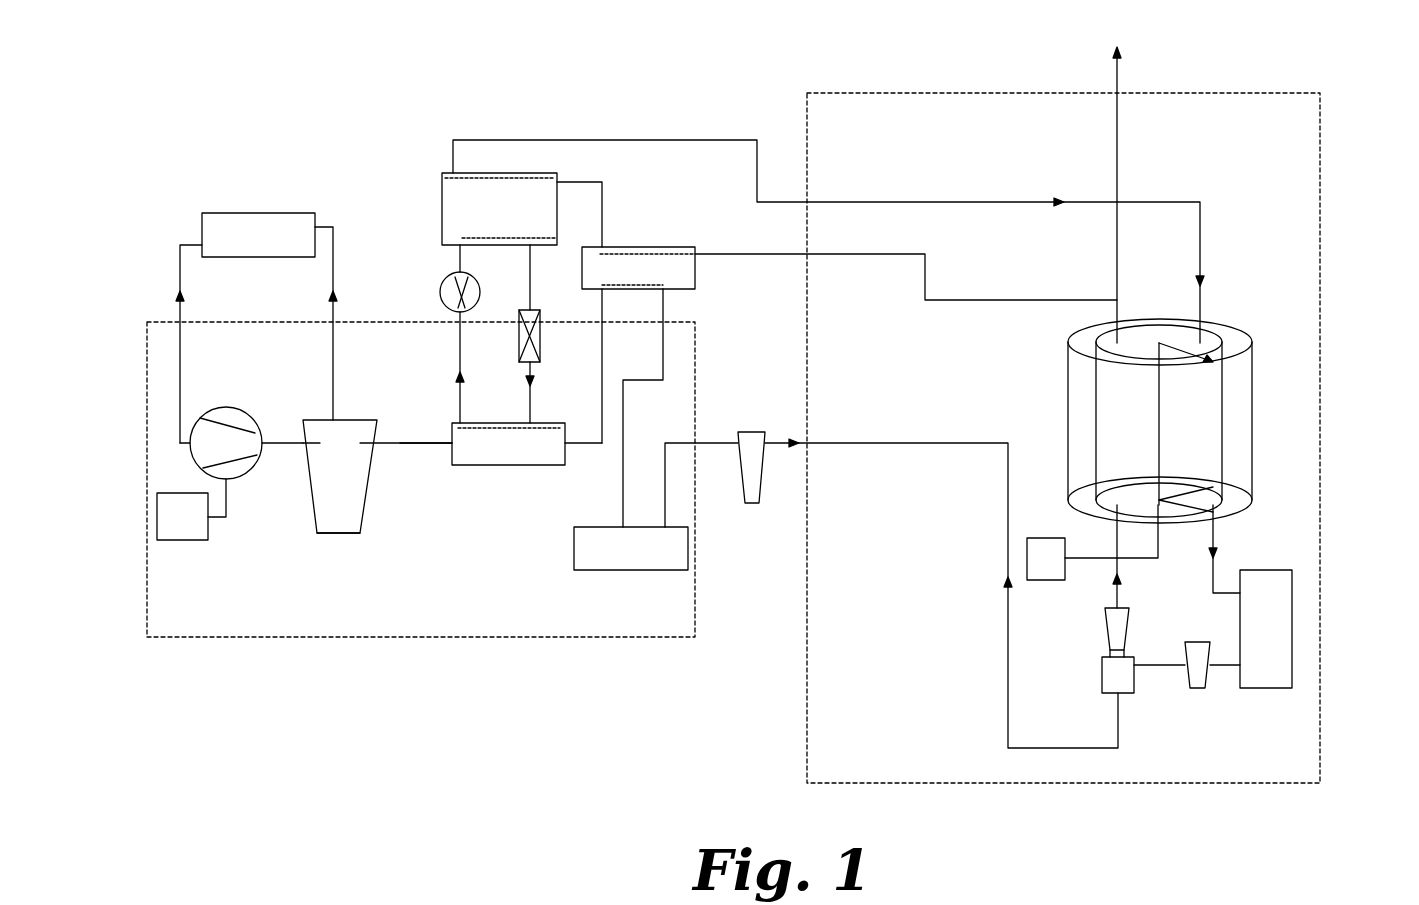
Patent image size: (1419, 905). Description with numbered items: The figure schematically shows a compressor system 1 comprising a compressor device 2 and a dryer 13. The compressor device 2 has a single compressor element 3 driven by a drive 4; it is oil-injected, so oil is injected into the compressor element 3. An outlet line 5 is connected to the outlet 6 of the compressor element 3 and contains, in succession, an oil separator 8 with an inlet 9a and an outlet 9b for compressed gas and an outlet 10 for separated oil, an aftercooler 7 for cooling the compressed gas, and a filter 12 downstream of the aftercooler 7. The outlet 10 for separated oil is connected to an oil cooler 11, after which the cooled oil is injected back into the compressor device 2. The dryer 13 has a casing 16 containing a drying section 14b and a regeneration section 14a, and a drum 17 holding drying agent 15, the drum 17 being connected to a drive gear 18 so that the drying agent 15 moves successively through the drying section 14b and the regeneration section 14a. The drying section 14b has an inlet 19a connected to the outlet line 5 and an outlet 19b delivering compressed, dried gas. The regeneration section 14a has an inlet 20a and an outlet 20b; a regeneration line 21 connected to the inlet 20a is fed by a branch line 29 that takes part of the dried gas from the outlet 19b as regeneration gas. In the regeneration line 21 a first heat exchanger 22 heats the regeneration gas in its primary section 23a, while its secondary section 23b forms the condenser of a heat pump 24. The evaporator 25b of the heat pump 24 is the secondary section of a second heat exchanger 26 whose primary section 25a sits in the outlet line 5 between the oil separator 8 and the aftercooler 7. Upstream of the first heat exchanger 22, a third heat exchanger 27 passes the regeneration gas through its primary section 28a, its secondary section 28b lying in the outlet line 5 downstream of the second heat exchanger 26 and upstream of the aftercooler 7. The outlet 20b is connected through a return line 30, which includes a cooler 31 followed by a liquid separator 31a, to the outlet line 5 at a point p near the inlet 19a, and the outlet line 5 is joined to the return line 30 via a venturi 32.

The compressor system 1 is at (336, 110).
The compressor device 2 is at (463, 637).
The compressor element 3 is at (250, 470).
The drive 4 is at (183, 540).
The outlet line 5 is at (428, 443).
The outlet 6 is at (264, 440).
The aftercooler 7 is at (601, 570).
The oil separator 8 is at (338, 533).
The inlet 9a is at (305, 445).
The outlet 9b is at (376, 443).
The outlet for separated oil 10 is at (337, 420).
The oil cooler 11 is at (218, 225).
The filter 12 is at (752, 497).
The dryer 13 is at (975, 783).
The regeneration section 14a is at (1212, 412).
The drying section 14b is at (1080, 393).
The drying agent 15 is at (1136, 461).
The casing 16 is at (1253, 455).
The drum 17 is at (1225, 427).
The drive gear 18 is at (1043, 572).
The inlet 19a is at (1117, 530).
The outlet 19b is at (1117, 270).
The inlet 20a is at (1170, 340).
The outlet 20b is at (1213, 530).
The regeneration line 21 is at (514, 140).
The first heat exchanger 22 is at (442, 185).
The primary section 23a is at (525, 178).
The secondary section 23b is at (447, 240).
The heat pump 24 is at (434, 321).
The primary section 25a is at (512, 455).
The evaporator 25b is at (527, 428).
The second heat exchanger 26 is at (565, 465).
The third heat exchanger 27 is at (695, 280).
The primary section 28a is at (665, 254).
The secondary section 28b is at (627, 283).
The branch line 29 is at (900, 254).
The return line 30 is at (1160, 665).
The cooler 31 is at (1283, 688).
The liquid separator 31a is at (1197, 688).
The venturi 32 is at (1108, 676).
The point p is at (1127, 690).